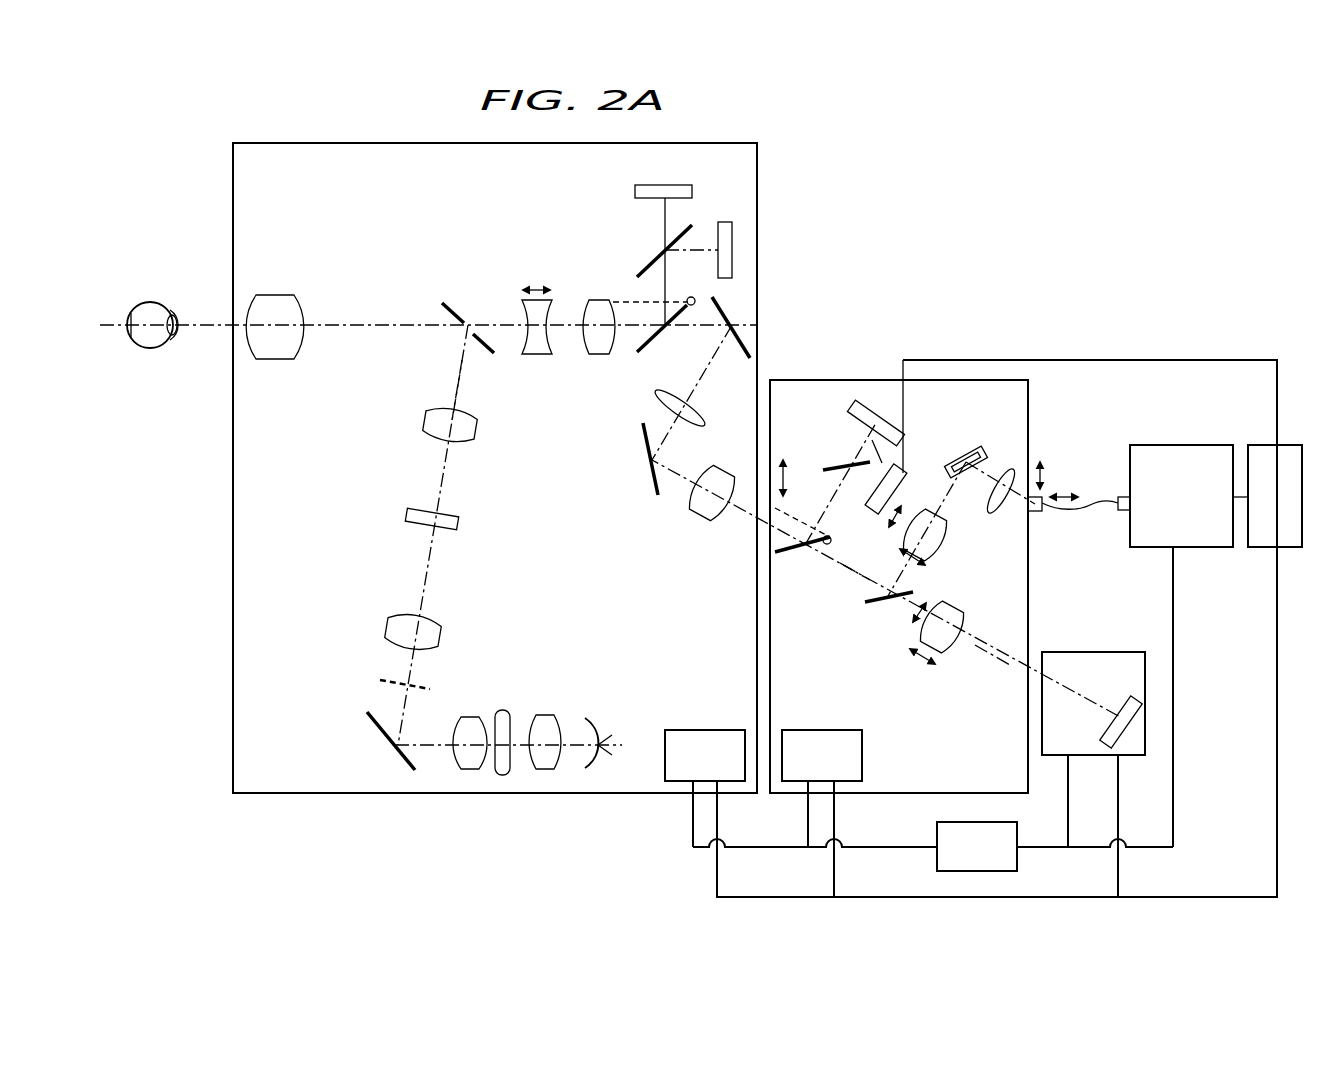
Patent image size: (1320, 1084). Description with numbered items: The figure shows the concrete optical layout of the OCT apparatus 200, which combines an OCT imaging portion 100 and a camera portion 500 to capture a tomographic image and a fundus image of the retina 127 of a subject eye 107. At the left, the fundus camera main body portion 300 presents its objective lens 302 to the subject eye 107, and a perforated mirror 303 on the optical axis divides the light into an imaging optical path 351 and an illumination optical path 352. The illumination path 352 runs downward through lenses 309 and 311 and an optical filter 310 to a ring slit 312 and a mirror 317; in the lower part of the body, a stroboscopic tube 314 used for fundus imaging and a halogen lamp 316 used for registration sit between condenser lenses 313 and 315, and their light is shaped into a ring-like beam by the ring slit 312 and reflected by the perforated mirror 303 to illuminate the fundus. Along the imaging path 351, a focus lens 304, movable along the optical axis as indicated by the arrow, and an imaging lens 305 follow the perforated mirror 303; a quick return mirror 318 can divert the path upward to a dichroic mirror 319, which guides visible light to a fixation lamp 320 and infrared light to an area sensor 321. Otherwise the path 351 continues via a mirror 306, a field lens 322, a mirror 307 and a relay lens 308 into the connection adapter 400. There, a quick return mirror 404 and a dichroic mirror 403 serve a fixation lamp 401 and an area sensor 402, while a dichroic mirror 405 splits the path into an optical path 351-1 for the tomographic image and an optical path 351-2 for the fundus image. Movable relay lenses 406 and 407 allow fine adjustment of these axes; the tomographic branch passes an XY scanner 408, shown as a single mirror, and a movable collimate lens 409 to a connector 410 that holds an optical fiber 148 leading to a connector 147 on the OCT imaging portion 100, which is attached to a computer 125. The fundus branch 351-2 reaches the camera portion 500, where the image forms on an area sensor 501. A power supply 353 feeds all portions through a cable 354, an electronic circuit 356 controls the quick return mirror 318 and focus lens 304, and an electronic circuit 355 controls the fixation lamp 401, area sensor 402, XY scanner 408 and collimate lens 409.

The OCT apparatus 200 is at (158, 181).
The fundus camera main body portion 300 is at (232, 243).
The retina 127 is at (134, 347).
The subject eye 107 is at (170, 350).
The objective lens 302 is at (278, 360).
The perforated mirror 303 is at (440, 306).
The optical path 351 is at (503, 336).
The optical path 352 is at (456, 373).
The focus lens 304 is at (540, 356).
The imaging lens 305 is at (597, 300).
The fixation lamp 320 is at (635, 190).
The dichroic mirror 319 is at (641, 268).
The area sensor 321 is at (725, 222).
The quick return mirror 318 is at (666, 343).
The mirror 306 is at (742, 352).
The field lens 322 is at (660, 398).
The mirror 307 is at (650, 480).
The relay lens 308 is at (700, 522).
The lens 309 is at (428, 421).
The optical filter 310 is at (407, 512).
The lens 311 is at (387, 629).
The ring slit 312 is at (378, 683).
The mirror 317 is at (393, 760).
The condenser lens 313 is at (462, 715).
The stroboscopic tube 314 is at (503, 710).
The condenser lens 315 is at (548, 712).
The halogen lamp 316 is at (600, 718).
The connection adapter 400 is at (800, 380).
The fixation lamp 401 is at (872, 405).
The area sensor 402 is at (905, 480).
The dichroic mirror 403 is at (835, 465).
The quick return mirror 404 is at (795, 552).
The dichroic mirror 405 is at (878, 602).
The relay lens 406 is at (960, 605).
The relay lens 407 is at (950, 535).
The XY scanner 408 is at (975, 450).
The collimate lens 409 is at (1010, 475).
The connector 410 is at (1038, 512).
The optical fiber 148 is at (1090, 503).
The connector 147 is at (1118, 510).
The optical path 351-1 is at (880, 580).
The optical path 351-2 is at (990, 665).
The OCT imaging portion 100 is at (1189, 496).
The computer 125 is at (1275, 496).
The camera portion 500 is at (1072, 652).
The area sensor 501 is at (1145, 723).
The electronic circuit 356 is at (705, 755).
The electronic circuit 355 is at (822, 755).
The power supply 353 is at (977, 846).
The cable 354 is at (1040, 848).